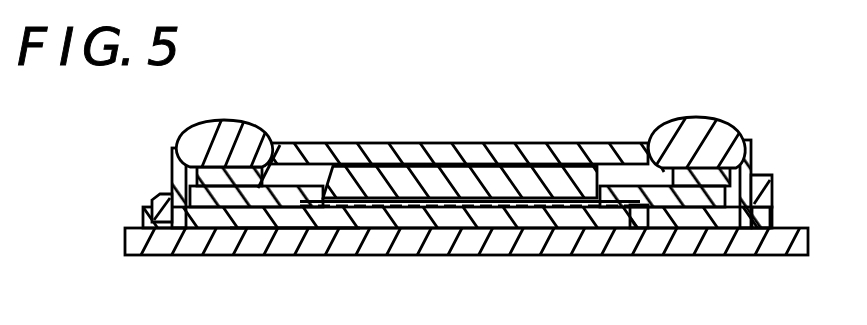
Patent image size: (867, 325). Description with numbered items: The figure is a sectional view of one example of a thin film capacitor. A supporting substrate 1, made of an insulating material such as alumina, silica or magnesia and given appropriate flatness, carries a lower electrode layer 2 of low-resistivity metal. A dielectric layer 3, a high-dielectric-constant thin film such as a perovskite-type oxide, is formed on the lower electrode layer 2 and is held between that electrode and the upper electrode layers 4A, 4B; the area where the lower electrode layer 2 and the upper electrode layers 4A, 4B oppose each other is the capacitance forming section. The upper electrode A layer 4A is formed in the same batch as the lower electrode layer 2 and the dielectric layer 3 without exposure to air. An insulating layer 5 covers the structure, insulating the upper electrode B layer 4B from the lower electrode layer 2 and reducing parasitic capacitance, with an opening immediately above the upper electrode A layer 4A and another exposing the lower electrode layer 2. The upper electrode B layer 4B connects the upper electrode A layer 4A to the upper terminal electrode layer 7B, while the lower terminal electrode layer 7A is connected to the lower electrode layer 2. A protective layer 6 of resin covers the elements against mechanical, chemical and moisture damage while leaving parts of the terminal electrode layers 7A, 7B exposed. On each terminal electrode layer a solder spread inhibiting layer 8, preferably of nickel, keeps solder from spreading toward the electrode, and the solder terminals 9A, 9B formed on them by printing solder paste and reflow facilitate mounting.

The supporting substrate 1 is at (158, 240).
The lower electrode layer 2 is at (262, 236).
The dielectric layer 3 is at (303, 236).
The upper electrode A layer 4A is at (580, 183).
The upper electrode B layer 4B is at (498, 182).
The insulating layer 5 is at (150, 226).
The protective layer 6 is at (141, 207).
The lower terminal electrode layer 7A is at (166, 186).
The upper terminal electrode layer 7B is at (762, 178).
The solder spread inhibiting layer 8 is at (173, 165).
The solder terminal 9A is at (218, 130).
The solder terminal 9B is at (697, 130).